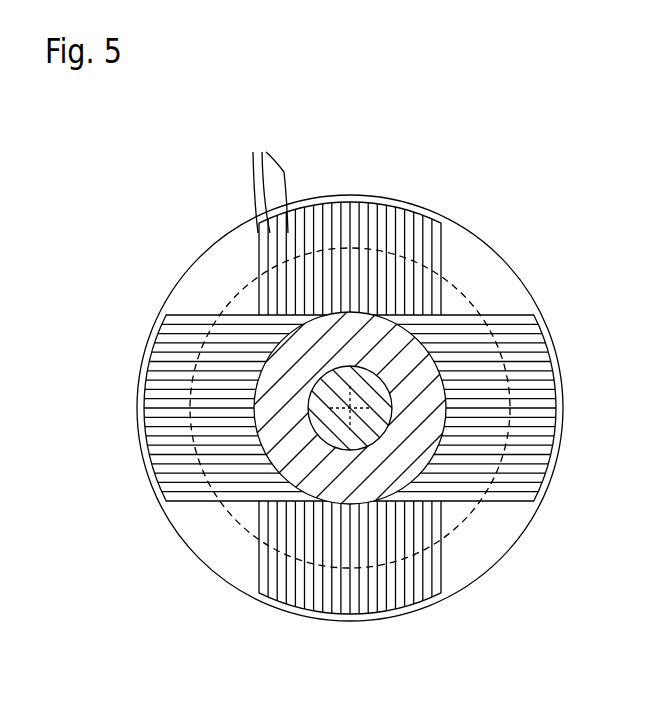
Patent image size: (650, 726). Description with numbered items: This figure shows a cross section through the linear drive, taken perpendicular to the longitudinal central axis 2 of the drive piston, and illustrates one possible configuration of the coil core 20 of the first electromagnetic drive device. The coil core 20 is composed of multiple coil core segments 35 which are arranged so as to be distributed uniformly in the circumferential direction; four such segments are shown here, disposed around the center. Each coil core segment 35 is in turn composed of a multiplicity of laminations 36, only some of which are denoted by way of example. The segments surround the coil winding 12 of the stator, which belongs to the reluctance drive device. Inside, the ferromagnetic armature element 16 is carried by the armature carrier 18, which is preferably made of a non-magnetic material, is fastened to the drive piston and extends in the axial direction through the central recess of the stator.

The longitudinal central axis 2 is at (322, 438).
The coil winding 12 is at (455, 307).
The armature element 16 is at (410, 435).
The armature carrier 18 is at (363, 370).
The coil core 20 is at (520, 194).
The coil core segment 35 is at (367, 218).
The lamination 36 is at (267, 181).